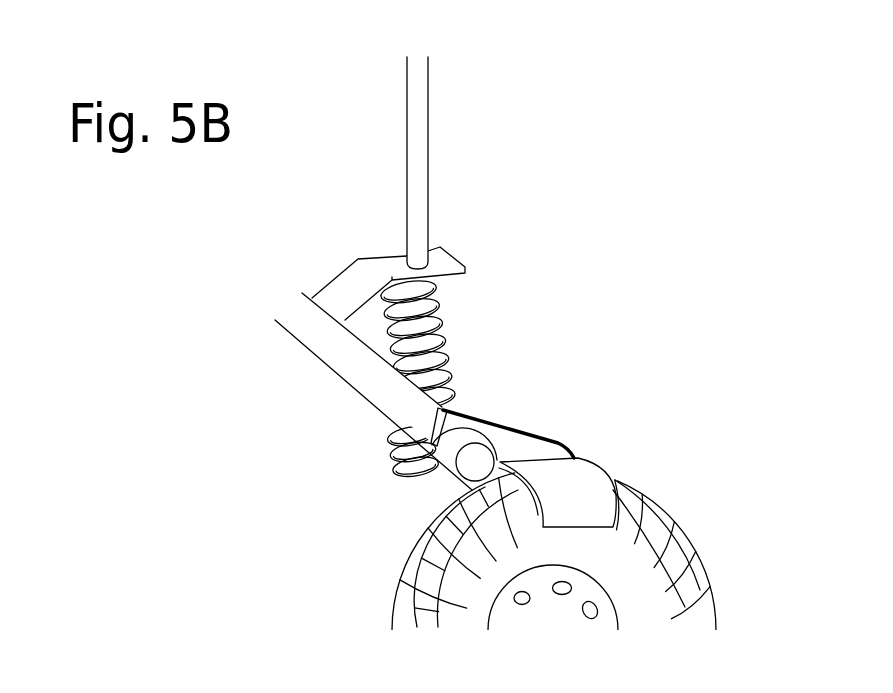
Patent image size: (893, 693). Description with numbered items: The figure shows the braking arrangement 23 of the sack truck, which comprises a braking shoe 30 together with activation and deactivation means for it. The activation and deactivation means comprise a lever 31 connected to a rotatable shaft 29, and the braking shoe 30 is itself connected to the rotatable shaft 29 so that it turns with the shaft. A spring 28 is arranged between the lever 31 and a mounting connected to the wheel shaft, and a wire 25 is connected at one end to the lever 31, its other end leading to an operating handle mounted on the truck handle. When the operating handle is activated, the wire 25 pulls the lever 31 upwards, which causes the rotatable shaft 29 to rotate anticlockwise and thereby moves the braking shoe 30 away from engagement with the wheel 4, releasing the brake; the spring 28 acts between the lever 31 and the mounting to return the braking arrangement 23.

The wheel 4 is at (685, 541).
The braking arrangement 23 is at (670, 157).
The wire 25 is at (420, 162).
The spring 28 is at (451, 362).
The rotatable shaft 29 is at (312, 333).
The braking shoe 30 is at (578, 487).
The lever 31 is at (447, 260).